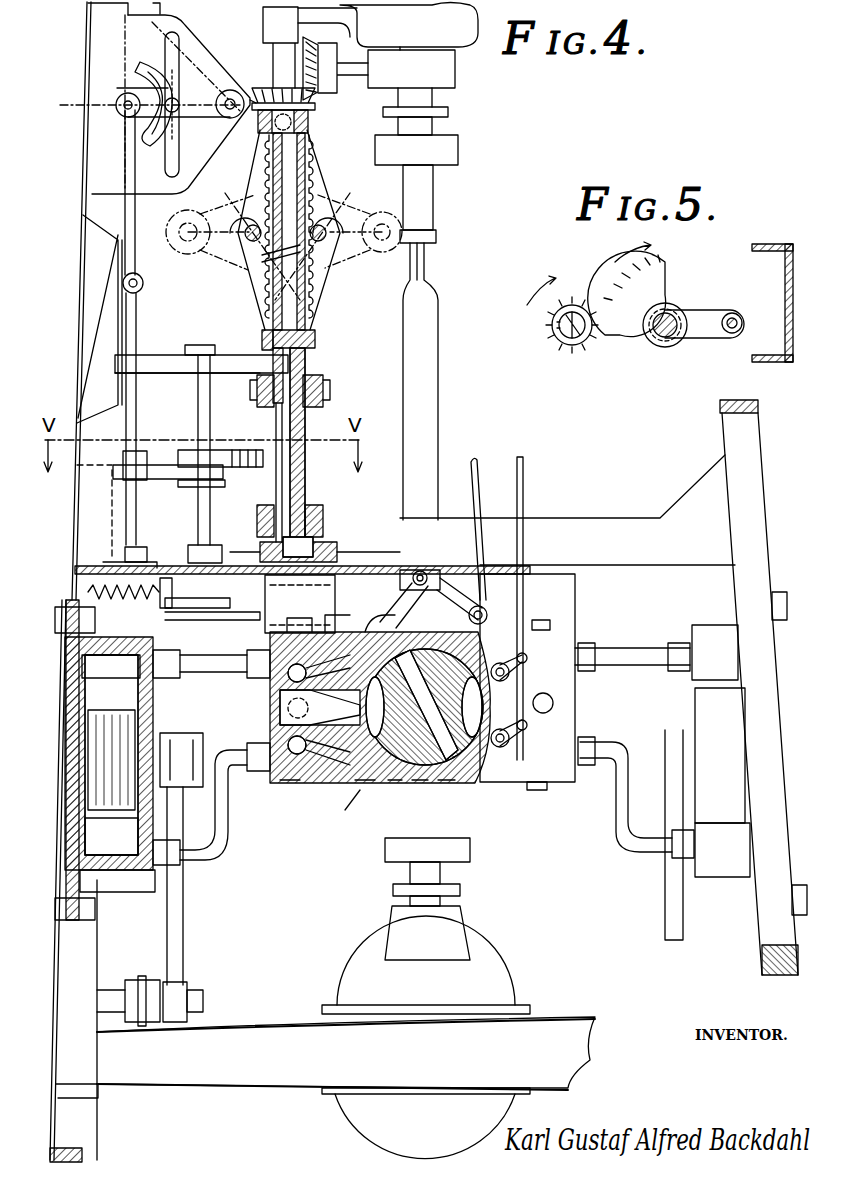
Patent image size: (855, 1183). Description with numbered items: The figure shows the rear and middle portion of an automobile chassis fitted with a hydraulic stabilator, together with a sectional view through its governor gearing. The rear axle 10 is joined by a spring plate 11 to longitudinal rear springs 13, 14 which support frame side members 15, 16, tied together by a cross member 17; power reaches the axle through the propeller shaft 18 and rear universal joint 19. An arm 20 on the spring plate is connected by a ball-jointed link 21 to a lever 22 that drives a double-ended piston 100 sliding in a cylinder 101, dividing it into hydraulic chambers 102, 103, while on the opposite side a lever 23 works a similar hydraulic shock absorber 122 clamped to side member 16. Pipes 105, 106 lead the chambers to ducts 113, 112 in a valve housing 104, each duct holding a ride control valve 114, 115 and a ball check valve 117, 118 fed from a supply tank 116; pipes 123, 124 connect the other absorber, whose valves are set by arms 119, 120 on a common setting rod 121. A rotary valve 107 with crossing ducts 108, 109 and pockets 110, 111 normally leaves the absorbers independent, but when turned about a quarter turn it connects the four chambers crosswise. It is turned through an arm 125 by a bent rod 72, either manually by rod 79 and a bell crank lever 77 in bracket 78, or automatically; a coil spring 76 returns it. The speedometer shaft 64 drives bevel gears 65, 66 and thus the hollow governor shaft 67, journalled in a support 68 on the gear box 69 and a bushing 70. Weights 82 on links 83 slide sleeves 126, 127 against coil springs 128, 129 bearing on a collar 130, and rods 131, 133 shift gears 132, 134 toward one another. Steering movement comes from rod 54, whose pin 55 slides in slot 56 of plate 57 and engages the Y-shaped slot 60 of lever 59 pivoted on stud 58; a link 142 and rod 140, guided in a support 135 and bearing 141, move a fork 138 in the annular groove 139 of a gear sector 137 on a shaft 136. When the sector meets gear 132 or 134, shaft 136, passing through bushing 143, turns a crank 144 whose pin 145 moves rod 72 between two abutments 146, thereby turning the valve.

In FIG. 4, the rear axle 10 is at (255, 1045).
In FIG. 4, the spring plate 11 is at (98, 1090).
In FIG. 4, the longitudinal rear spring 13 is at (62, 1142).
In FIG. 4, the longitudinal rear spring 14 is at (773, 970).
In FIG. 4, the frame side member 15 is at (70, 995).
In FIG. 5, the frame side member 15 is at (793, 318).
In FIG. 4, the frame side member 16 is at (745, 575).
In FIG. 4, the cross member 17 is at (620, 530).
In FIG. 4, the propeller shaft 18 is at (420, 426).
In FIG. 4, the rear universal joint 19 is at (460, 860).
In FIG. 4, the arm 20 is at (104, 1000).
In FIG. 4, the ball-jointed link 21 is at (162, 975).
In FIG. 4, the lever 22 is at (178, 940).
In FIG. 4, the lever 23 is at (672, 915).
In FIG. 4, the horizontal rod 54 is at (93, 8).
In FIG. 4, the vertical pin 55 is at (118, 98).
In FIG. 4, the slot 56 is at (170, 155).
In FIG. 4, the horizontal plate 57 is at (185, 50).
In FIG. 4, the stud 58 is at (232, 95).
In FIG. 4, the lever 59 is at (178, 98).
In FIG. 4, the Y-shaped slot 60 is at (150, 75).
In FIG. 4, the speedometer shaft 64 is at (355, 65).
In FIG. 4, the bevel gear 65 is at (322, 80).
In FIG. 4, the bevel gear 66 is at (265, 110).
In FIG. 4, the governor shaft 67 is at (305, 430).
In FIG. 5, the governor shaft 67 is at (575, 345).
In FIG. 4, the support 68 is at (318, 15).
In FIG. 4, the gear box 69 is at (442, 20).
In FIG. 4, the bushing 70 is at (318, 553).
In FIG. 4, the rod 72 is at (268, 612).
In FIG. 4, the coil spring 76 is at (80, 588).
In FIG. 4, the bell crank lever 77 is at (400, 612).
In FIG. 4, the bracket 78 is at (405, 570).
In FIG. 4, the rod 79 is at (490, 458).
In FIG. 4, the weights 82 is at (238, 236).
In FIG. 4, the links 83 is at (315, 225).
In FIG. 4, the double-ended piston 100 is at (105, 760).
In FIG. 4, the cylinder 101 is at (78, 705).
In FIG. 4, the hydraulic chamber 102 is at (105, 662).
In FIG. 4, the hydraulic chamber 103 is at (110, 830).
In FIG. 4, the valve housing 104 is at (370, 795).
In FIG. 4, the pipe 105 is at (208, 655).
In FIG. 4, the pipe 106 is at (212, 855).
In FIG. 4, the rotary valve 107 is at (420, 790).
In FIG. 4, the duct 108 is at (445, 790).
In FIG. 4, the duct 109 is at (395, 790).
In FIG. 4, the pocket 110 is at (470, 705).
In FIG. 4, the pocket 111 is at (365, 790).
In FIG. 4, the duct 112 is at (320, 795).
In FIG. 4, the duct 113 is at (318, 640).
In FIG. 4, the ride control valve 114 is at (365, 800).
In FIG. 4, the ride control valve 115 is at (340, 640).
In FIG. 4, the supply tank 116 is at (262, 700).
In FIG. 4, the ball check valve 117 is at (283, 782).
In FIG. 4, the ball check valve 118 is at (278, 645).
In FIG. 4, the arm 119 is at (520, 740).
In FIG. 4, the arm 120 is at (512, 672).
In FIG. 4, the setting rod 121 is at (538, 478).
In FIG. 4, the hydraulic shock absorber 122 is at (713, 750).
In FIG. 4, the pipe 123 is at (635, 650).
In FIG. 4, the pipe 124 is at (635, 795).
In FIG. 4, the arm 125 is at (415, 635).
In FIG. 4, the sleeve 126 is at (310, 126).
In FIG. 4, the sleeve 127 is at (315, 342).
In FIG. 4, the coil spring 128 is at (265, 192).
In FIG. 4, the coil spring 129 is at (266, 330).
In FIG. 4, the collar 130 is at (310, 245).
In FIG. 4, the rod 131 is at (265, 270).
In FIG. 4, the gear 132 is at (323, 382).
In FIG. 4, the rod 133 is at (300, 455).
In FIG. 5, the rod 133 is at (555, 345).
In FIG. 4, the gear 134 is at (323, 508).
In FIG. 5, the gear 134 is at (553, 327).
In FIG. 4, the support 135 is at (157, 355).
In FIG. 4, the shaft 136 is at (202, 392).
In FIG. 5, the shaft 136 is at (658, 340).
In FIG. 4, the gear sector 137 is at (222, 455).
In FIG. 5, the gear sector 137 is at (640, 295).
In FIG. 4, the fork 138 is at (162, 480).
In FIG. 5, the fork 138 is at (705, 330).
In FIG. 4, the annular groove 139 is at (222, 479).
In FIG. 4, the rod 140 is at (135, 392).
In FIG. 5, the rod 140 is at (738, 317).
In FIG. 4, the bearing 141 is at (135, 555).
In FIG. 4, the link 142 is at (130, 210).
In FIG. 4, the bushing 143 is at (205, 552).
In FIG. 4, the crank 144 is at (200, 604).
In FIG. 4, the pin 145 is at (172, 585).
In FIG. 4, the abutments 146 is at (180, 520).